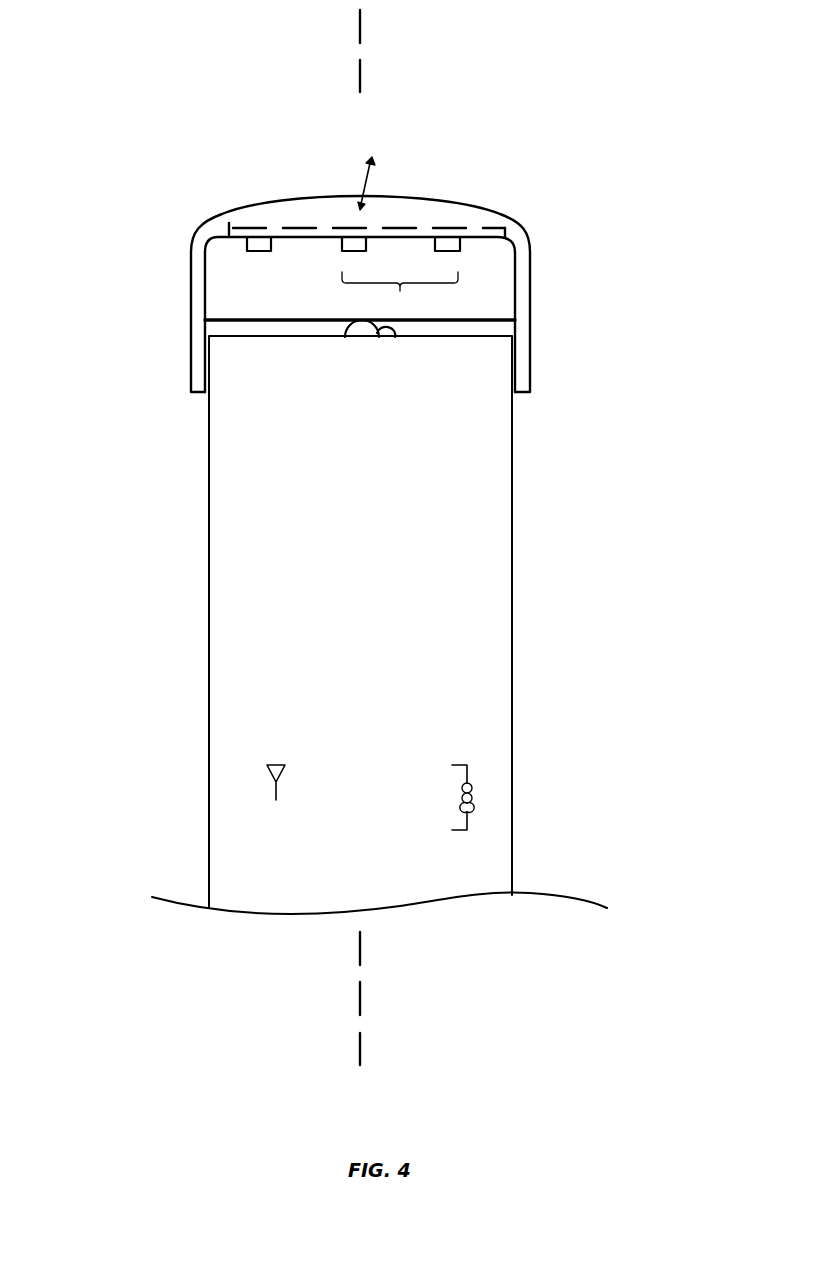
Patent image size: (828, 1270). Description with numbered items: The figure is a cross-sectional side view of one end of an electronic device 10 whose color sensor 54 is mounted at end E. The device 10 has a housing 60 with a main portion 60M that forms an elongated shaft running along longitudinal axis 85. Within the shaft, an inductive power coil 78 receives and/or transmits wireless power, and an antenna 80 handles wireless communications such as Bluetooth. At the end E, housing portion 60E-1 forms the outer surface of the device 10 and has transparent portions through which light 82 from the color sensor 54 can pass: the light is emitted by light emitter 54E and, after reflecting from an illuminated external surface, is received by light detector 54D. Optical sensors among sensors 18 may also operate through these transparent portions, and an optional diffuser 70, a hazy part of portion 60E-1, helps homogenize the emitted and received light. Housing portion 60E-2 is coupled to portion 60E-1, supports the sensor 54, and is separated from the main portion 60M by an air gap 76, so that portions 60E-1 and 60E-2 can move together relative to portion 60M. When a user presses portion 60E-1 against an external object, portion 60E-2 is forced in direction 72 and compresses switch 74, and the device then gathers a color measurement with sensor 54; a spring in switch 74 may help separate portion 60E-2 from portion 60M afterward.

The longitudinal axis 85 is at (362, 27).
The light 82 is at (367, 181).
The diffuser 70 is at (507, 226).
The housing portion 60E-1 is at (527, 242).
The housing portion 60E-2 is at (507, 288).
The sensors 18 is at (262, 252).
The light emitter 54E is at (350, 252).
The light detector 54D is at (443, 252).
The color sensor 54 is at (400, 294).
The air gap 76 is at (282, 328).
The switch 74 is at (392, 334).
The direction 72 is at (582, 375).
The main housing portion 60M is at (512, 637).
The housing 60 is at (538, 549).
The antenna 80 is at (263, 806).
The inductive power coil 78 is at (460, 838).
The electronic device 10 is at (124, 367).
The end E is at (131, 232).